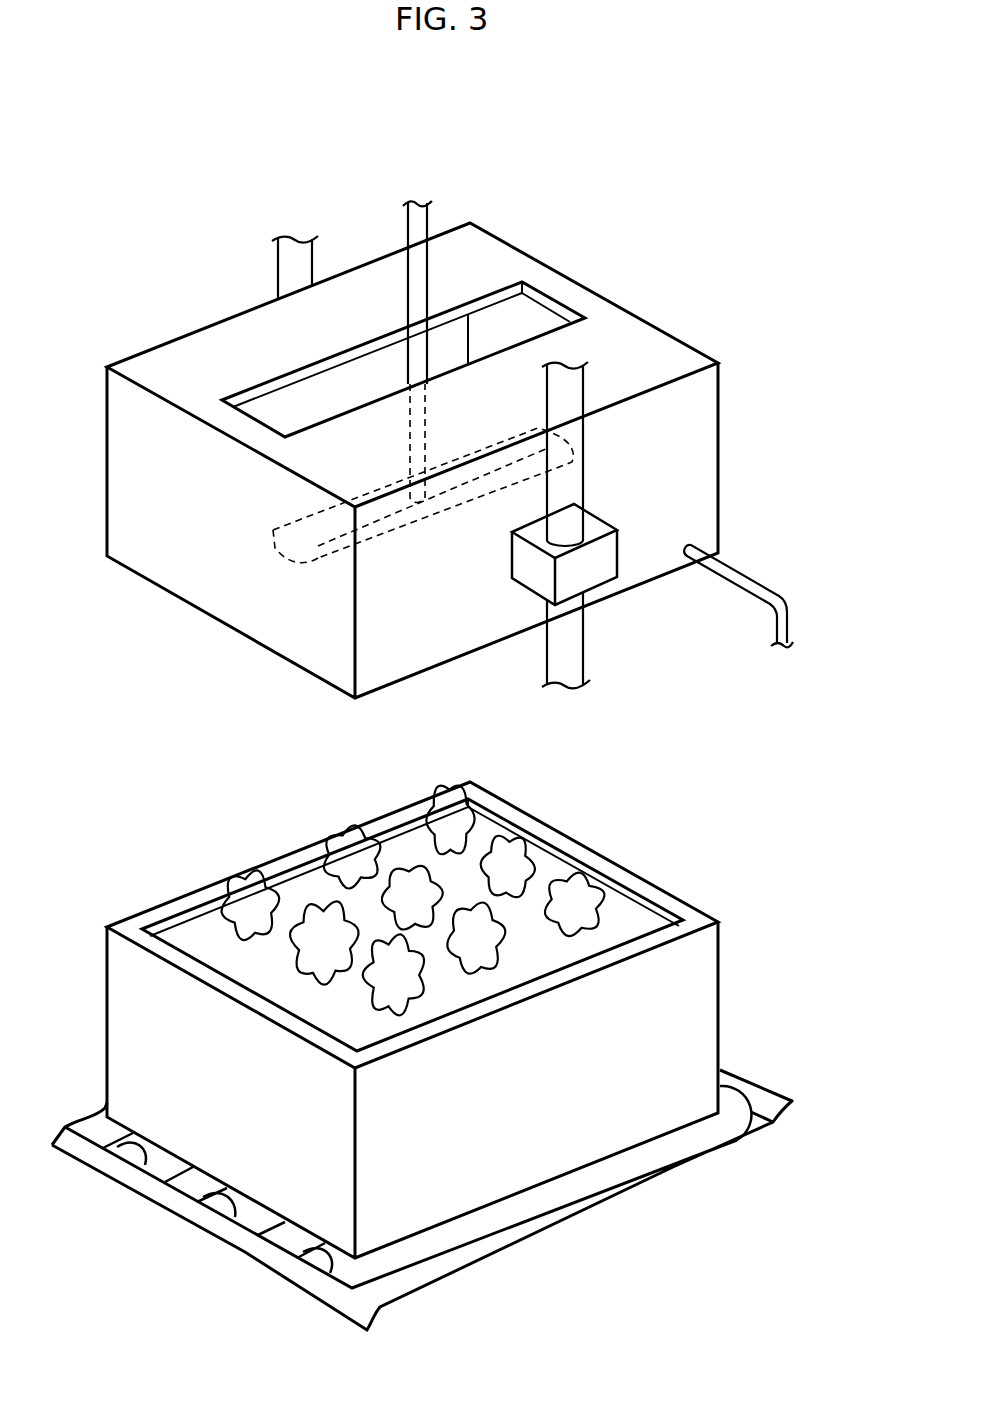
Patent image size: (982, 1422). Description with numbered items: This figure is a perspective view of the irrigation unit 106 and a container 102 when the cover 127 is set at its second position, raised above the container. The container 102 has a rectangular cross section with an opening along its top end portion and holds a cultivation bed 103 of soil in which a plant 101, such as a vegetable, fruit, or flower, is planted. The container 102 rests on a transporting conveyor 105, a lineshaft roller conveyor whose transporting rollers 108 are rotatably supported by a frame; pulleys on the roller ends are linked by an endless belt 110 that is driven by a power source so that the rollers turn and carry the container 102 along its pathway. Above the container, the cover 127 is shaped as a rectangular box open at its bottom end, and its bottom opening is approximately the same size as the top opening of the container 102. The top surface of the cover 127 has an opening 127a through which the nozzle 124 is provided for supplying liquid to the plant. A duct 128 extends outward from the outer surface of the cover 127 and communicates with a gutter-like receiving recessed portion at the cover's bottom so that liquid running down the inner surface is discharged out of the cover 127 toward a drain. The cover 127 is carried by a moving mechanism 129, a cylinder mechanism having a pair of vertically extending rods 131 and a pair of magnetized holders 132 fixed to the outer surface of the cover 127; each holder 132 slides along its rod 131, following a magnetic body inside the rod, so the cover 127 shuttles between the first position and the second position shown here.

The plant 101 is at (568, 892).
The container 102 is at (690, 982).
The cultivation bed 103 is at (617, 913).
The transporting conveyor 105 is at (285, 1240).
The irrigation unit 106 is at (680, 268).
The transporting rollers 108 is at (240, 1212).
The endless belt 110 is at (753, 1095).
The nozzle 124 is at (420, 220).
The cover 127 is at (695, 408).
The opening 127a is at (540, 320).
The duct 128 is at (750, 578).
The moving mechanism 129 is at (624, 588).
The rods 131 is at (288, 258).
The holders 132 is at (592, 577).